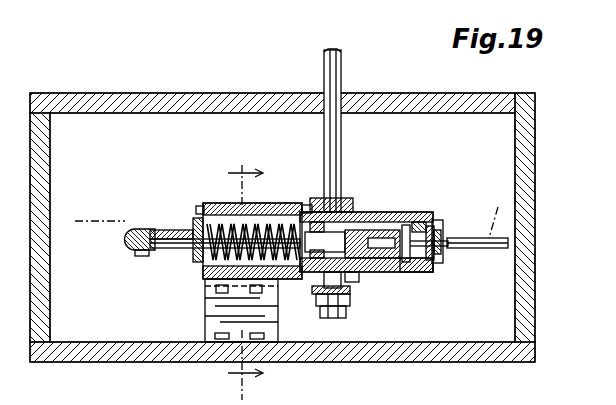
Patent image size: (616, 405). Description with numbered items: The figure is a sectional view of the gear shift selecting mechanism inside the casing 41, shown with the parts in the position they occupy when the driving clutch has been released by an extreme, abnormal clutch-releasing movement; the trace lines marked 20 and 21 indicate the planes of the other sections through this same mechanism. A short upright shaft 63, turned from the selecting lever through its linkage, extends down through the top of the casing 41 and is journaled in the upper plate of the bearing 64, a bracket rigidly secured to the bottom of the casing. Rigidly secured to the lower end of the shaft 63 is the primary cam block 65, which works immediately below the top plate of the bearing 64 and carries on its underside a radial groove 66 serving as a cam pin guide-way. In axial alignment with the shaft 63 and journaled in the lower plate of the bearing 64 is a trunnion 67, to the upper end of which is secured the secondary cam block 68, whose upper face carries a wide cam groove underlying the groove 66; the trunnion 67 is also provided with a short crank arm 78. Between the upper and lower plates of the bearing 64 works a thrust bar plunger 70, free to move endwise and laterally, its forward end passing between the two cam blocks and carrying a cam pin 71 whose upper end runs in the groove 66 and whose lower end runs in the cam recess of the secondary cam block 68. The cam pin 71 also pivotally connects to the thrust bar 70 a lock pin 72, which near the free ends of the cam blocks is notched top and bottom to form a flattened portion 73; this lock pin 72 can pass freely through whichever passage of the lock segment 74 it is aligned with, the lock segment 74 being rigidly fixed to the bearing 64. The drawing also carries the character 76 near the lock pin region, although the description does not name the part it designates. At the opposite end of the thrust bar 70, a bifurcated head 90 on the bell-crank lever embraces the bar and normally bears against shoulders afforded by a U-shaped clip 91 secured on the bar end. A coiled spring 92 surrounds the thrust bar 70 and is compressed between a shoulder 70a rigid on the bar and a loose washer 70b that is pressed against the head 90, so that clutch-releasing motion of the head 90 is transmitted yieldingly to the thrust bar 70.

The section line 20- 20 is at (283, 214).
The section line 21- 21 is at (245, 273).
The casing 41 is at (520, 240).
The short upright shaft 63 is at (334, 82).
The bearing 64 is at (204, 204).
The primary cam block 65 is at (380, 216).
The radial groove 66 is at (356, 222).
The trunnion 67 is at (334, 318).
The secondary cam block 68 is at (420, 272).
The thrust bar plunger 70 is at (362, 279).
The shoulder 70a is at (308, 206).
The washer 70b is at (199, 214).
The cam pin 71 is at (408, 222).
The lock pin 72 is at (450, 235).
The flattened portion 73 is at (436, 225).
The lock segment 74 is at (456, 261).
The packing nut 76 is at (424, 220).
The short crank arm 78 is at (350, 290).
The bifurcated head 90 is at (180, 230).
The U-shaped clip 91 is at (130, 242).
The coiled spring 92 is at (256, 208).